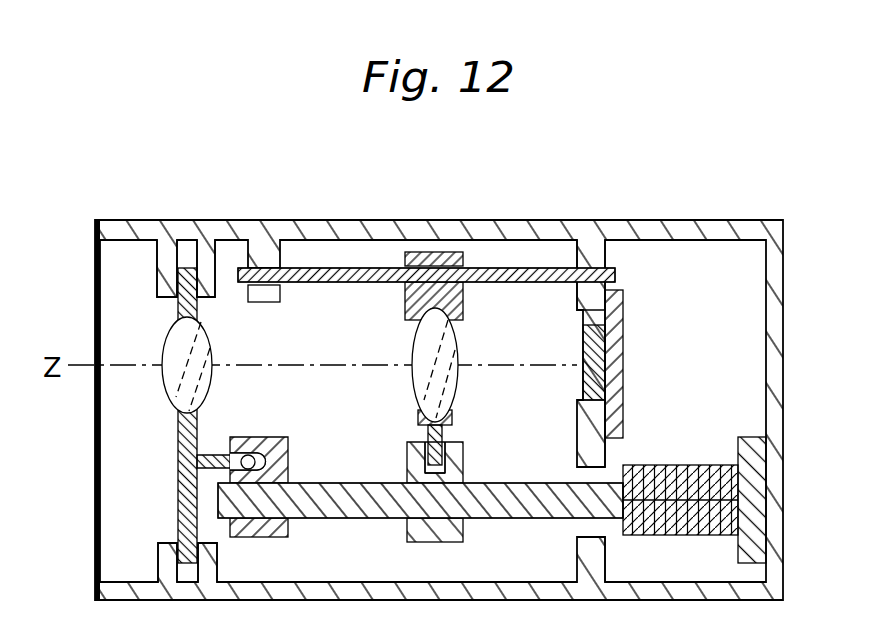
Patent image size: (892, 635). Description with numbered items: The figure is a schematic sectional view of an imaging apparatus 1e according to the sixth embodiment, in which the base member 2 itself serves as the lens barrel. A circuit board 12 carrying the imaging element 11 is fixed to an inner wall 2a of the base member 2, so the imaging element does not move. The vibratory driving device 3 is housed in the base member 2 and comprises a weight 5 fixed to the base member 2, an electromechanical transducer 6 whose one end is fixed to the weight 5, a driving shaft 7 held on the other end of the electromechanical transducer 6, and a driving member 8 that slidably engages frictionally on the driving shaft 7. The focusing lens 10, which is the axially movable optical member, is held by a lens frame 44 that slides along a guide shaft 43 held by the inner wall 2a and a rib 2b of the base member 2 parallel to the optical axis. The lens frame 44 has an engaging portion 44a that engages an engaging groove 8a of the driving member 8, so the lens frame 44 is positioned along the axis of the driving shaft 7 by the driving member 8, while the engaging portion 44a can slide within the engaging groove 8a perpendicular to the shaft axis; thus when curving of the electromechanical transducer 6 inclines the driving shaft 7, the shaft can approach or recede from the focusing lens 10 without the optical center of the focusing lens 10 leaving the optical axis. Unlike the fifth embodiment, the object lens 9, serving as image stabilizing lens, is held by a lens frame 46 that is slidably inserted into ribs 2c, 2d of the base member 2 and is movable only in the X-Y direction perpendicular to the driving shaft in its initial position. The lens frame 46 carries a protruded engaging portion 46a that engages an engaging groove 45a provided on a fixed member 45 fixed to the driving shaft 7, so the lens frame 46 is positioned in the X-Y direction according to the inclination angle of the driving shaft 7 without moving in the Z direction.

The imaging apparatus 1e is at (371, 218).
The base member 2 is at (502, 218).
The inner wall 2a is at (577, 299).
The rib 2b is at (257, 303).
The rib 2c is at (157, 270).
The rib 2d is at (158, 554).
The vibratory driving device 3 is at (660, 448).
The weight 5 is at (751, 437).
The electromechanical transducer 6 is at (709, 465).
The driving shaft 7 is at (551, 483).
The driving member 8 is at (405, 533).
The engaging groove 8a is at (445, 442).
The object lens 9 is at (183, 330).
The focusing lens 10 is at (458, 331).
The imaging element 11 is at (583, 379).
The circuit board 12 is at (623, 334).
The guide shaft 43 is at (297, 286).
The lens frame 44 is at (405, 305).
The engaging portion 44a is at (428, 435).
The fixed member 45 is at (290, 455).
The engaging groove 45a is at (278, 438).
The lens frame 46 is at (178, 442).
The engaging portion 46a is at (243, 460).